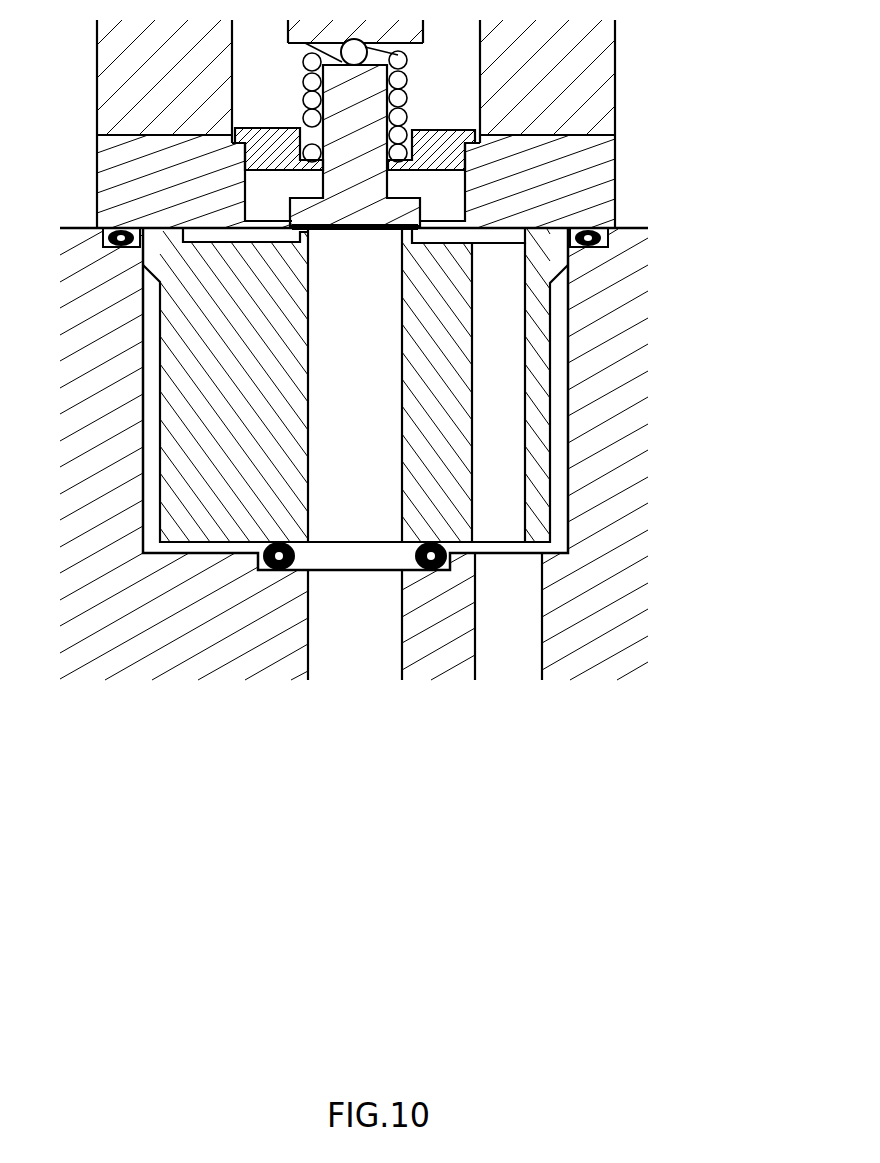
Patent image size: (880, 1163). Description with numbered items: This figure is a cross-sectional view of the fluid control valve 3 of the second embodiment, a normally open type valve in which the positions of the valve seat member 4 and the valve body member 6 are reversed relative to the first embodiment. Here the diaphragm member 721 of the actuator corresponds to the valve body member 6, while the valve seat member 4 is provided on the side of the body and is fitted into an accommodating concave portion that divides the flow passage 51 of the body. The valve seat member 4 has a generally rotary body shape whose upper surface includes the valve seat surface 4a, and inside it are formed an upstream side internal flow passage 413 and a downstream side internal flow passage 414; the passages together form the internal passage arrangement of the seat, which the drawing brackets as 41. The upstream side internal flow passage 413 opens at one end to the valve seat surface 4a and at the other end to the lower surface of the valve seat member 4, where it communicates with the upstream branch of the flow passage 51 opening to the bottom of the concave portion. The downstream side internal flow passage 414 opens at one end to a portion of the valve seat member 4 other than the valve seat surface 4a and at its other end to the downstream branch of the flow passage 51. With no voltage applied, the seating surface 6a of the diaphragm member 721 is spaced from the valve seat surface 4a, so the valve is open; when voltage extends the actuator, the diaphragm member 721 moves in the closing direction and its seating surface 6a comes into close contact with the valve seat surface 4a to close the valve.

The fluid control valve 3 is at (640, 80).
The diaphragm member 721 is at (615, 180).
The valve body member 6 is at (431, 177).
The valve seat surface 4a is at (304, 222).
The seating surface 6a is at (403, 230).
The valve seat member 4 is at (160, 413).
The piston member 41 is at (470, 385).
The upstream side internal flow passage 413 is at (360, 387).
The downstream side internal flow passage 414 is at (495, 495).
The flow passage 51 is at (540, 644).